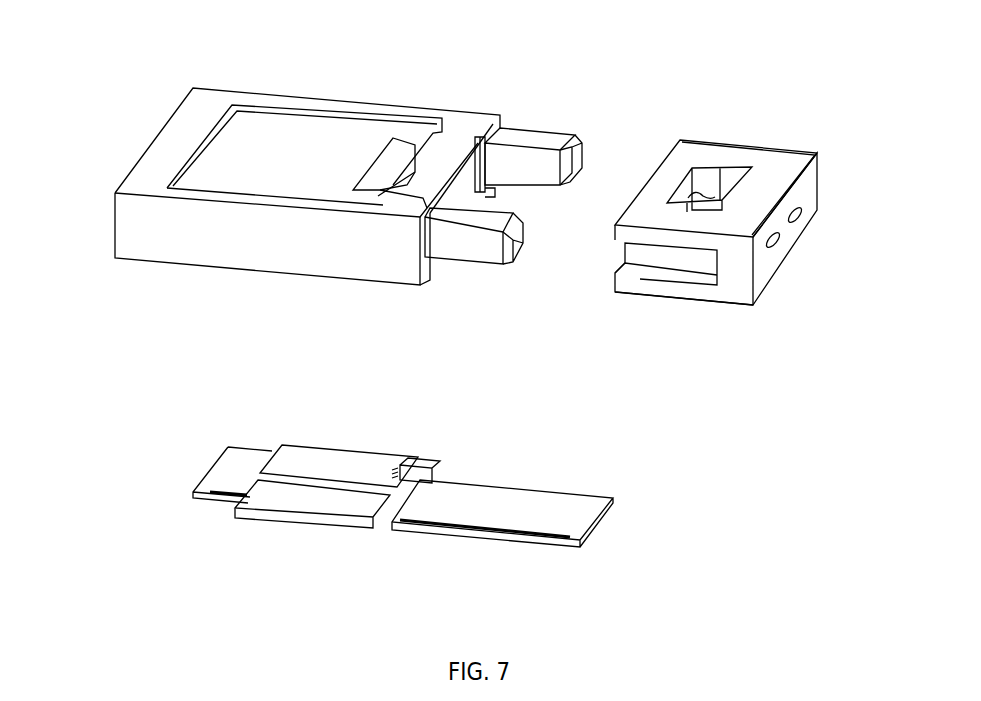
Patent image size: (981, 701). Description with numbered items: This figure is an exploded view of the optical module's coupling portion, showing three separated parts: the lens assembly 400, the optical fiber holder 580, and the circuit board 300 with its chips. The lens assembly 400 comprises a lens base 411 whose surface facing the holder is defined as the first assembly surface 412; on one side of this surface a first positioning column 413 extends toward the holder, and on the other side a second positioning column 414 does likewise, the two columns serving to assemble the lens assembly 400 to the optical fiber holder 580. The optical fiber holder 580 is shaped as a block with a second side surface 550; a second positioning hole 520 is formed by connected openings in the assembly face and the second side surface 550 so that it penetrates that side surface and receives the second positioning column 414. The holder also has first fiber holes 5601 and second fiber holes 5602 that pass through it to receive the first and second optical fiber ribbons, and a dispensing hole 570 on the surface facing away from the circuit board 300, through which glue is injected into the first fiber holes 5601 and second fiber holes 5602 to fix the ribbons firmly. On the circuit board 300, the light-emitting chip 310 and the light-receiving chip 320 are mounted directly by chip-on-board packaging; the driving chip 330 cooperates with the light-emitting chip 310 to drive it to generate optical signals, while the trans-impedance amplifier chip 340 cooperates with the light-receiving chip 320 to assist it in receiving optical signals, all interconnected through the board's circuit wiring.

The lens assembly 400 is at (133, 101).
The lens base 411 is at (267, 128).
The first assembly surface 412 is at (475, 197).
The first positioning column 413 is at (525, 138).
The second positioning column 414 is at (476, 240).
The second side surface 550 is at (732, 277).
The optical fiber holder 580 is at (786, 162).
The dispensing hole 570 is at (710, 180).
The second positioning hole 520 is at (660, 260).
The first fiber holes 5601 is at (780, 243).
The second fiber holes 5602 is at (800, 212).
The circuit board 300 is at (222, 477).
The trans-impedance amplifier chip 340 is at (343, 463).
The driving chip 330 is at (317, 497).
The light-receiving chip 320 is at (423, 463).
The light-emitting chip 310 is at (393, 510).